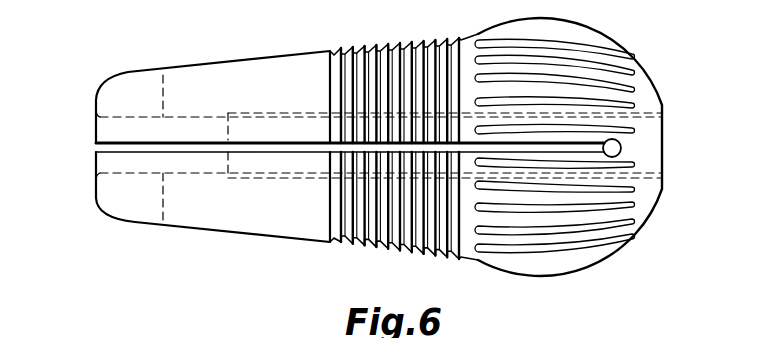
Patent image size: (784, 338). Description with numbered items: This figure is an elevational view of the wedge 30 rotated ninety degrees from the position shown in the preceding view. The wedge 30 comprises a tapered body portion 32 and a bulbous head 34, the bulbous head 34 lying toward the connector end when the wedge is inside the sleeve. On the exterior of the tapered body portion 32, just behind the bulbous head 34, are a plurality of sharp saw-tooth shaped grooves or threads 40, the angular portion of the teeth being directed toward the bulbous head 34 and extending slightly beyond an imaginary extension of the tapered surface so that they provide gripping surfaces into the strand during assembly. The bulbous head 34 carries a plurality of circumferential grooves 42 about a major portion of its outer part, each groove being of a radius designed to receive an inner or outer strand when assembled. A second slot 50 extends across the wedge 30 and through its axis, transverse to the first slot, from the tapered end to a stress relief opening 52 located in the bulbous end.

The wedge 30 is at (379, 155).
The tapered body portion 32 is at (208, 64).
The bulbous head 34 is at (630, 241).
The saw teeth shaped grooves or threads 40 is at (376, 50).
The circumferential grooves 42 is at (570, 75).
The second slot 50 is at (99, 152).
The stress relief opening 52 is at (611, 140).